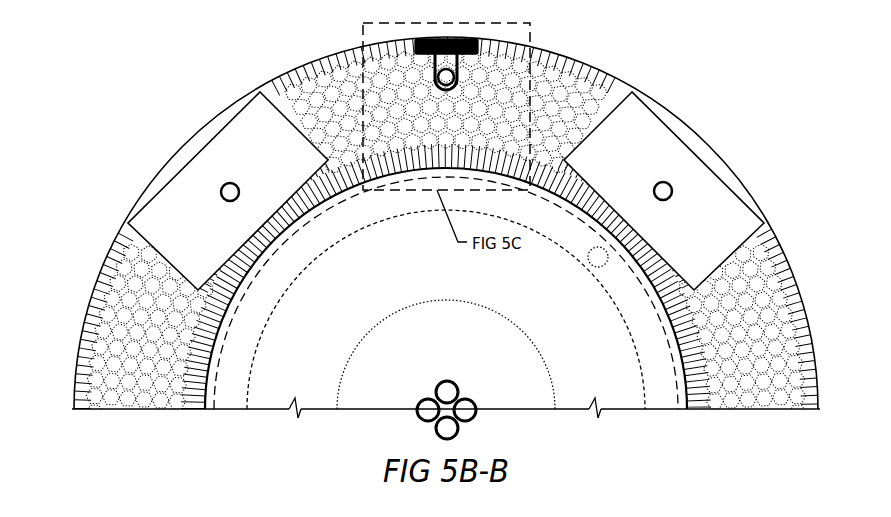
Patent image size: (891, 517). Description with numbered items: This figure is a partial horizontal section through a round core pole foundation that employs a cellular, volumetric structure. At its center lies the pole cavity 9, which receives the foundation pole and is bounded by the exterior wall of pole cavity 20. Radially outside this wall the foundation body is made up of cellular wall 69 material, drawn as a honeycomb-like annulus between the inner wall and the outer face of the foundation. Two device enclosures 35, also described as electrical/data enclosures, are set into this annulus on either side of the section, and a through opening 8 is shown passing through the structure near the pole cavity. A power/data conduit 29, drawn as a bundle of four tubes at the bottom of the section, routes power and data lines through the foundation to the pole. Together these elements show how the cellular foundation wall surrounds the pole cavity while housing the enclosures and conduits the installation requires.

The through opening 8 is at (584, 254).
The pole cavity 9 is at (235, 332).
The exterior wall of pole cavity 20 is at (108, 262).
The power/data conduit 29 is at (434, 395).
The device enclosure 35 is at (173, 164).
The cellular wall 69 is at (686, 355).